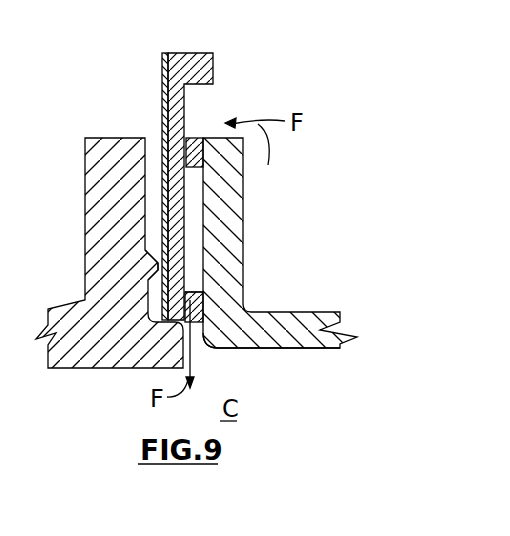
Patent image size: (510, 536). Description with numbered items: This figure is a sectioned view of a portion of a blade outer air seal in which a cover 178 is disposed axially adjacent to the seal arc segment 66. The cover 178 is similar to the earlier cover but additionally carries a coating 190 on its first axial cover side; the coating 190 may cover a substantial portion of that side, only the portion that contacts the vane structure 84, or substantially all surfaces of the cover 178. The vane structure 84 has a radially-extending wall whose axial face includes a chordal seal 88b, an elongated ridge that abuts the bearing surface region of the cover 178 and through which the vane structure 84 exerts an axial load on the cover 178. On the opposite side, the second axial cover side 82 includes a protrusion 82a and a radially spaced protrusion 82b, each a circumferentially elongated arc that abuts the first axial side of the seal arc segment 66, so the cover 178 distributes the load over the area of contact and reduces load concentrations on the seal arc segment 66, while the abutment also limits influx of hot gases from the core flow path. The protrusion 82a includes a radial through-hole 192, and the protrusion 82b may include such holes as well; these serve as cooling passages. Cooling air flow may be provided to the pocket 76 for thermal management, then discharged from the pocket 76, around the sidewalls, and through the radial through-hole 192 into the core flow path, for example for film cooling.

The cover 178 is at (194, 53).
The coating 190 is at (162, 113).
The protrusion 82b is at (192, 138).
The second axial cover side 82 is at (186, 222).
The chordal seal 88b is at (158, 252).
The radial through-hole 192 is at (192, 292).
The pocket 76 is at (272, 255).
The protrusion 82a is at (197, 322).
The vane structure 84 is at (103, 370).
The seal arc segment 66 is at (308, 352).